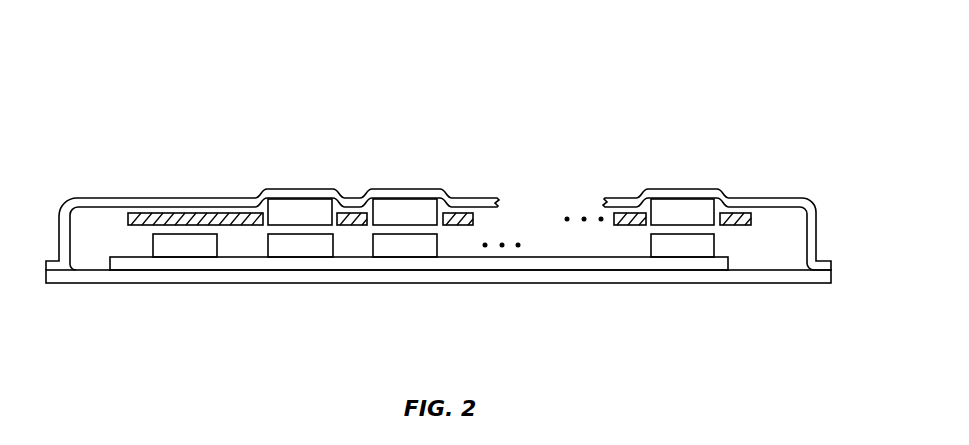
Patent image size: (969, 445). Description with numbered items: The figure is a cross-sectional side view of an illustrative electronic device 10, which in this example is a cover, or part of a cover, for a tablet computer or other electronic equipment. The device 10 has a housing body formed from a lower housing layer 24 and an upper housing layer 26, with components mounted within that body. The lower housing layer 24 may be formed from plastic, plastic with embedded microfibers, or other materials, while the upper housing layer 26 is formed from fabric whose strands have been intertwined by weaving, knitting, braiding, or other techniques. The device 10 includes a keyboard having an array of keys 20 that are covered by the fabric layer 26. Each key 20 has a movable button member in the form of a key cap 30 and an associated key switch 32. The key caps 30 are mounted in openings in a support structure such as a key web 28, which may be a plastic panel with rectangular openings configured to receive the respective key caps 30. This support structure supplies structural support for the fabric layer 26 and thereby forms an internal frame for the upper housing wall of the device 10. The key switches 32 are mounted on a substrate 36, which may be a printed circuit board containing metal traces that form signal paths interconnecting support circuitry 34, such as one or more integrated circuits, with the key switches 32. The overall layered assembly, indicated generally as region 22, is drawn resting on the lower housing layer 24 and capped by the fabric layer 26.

The electronic device 10 is at (812, 54).
The keys 20 is at (268, 170).
The sensor assembly 22 is at (848, 209).
The lower housing layer 24 is at (637, 276).
The upper housing layer 26 is at (789, 198).
The key web 28 is at (170, 212).
The key cap 30 is at (277, 212).
The key switch 32 is at (299, 246).
The support circuitry 34 is at (199, 248).
The substrate 36 is at (110, 265).